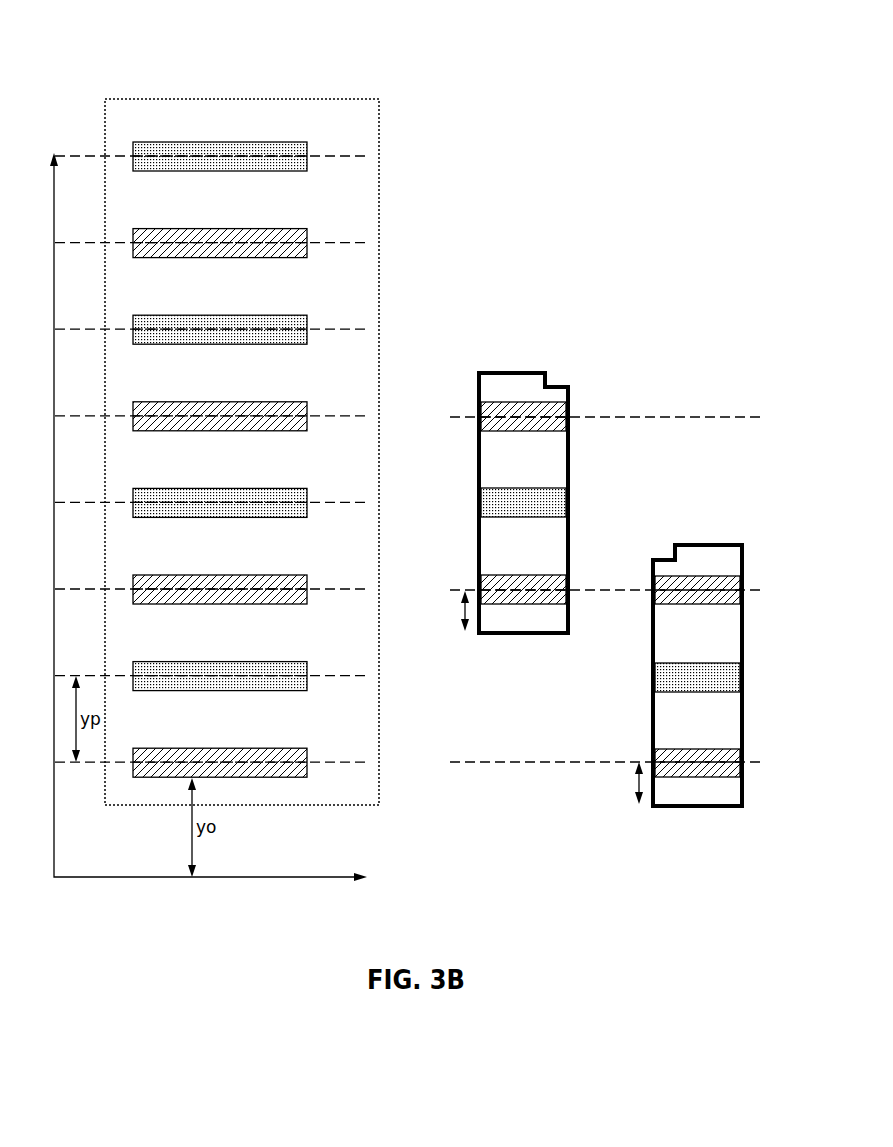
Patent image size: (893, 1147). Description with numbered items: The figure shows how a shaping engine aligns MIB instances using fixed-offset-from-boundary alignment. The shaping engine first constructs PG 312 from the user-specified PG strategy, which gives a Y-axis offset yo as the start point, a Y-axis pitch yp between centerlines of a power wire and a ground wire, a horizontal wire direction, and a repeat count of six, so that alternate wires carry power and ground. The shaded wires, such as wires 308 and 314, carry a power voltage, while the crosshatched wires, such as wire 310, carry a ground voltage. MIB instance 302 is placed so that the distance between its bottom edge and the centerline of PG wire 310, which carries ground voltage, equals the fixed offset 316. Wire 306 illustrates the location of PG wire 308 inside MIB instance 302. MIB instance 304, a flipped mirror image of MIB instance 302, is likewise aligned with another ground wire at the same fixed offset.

The PG 312 is at (140, 99).
The MIB instance 302 is at (554, 488).
The MIB instance 304 is at (730, 545).
The wire 306 is at (568, 503).
The PG wire 308 is at (307, 488).
The PG wire 310 is at (307, 575).
The PG wire 314 is at (307, 661).
The fixed offset 316 is at (466, 612).